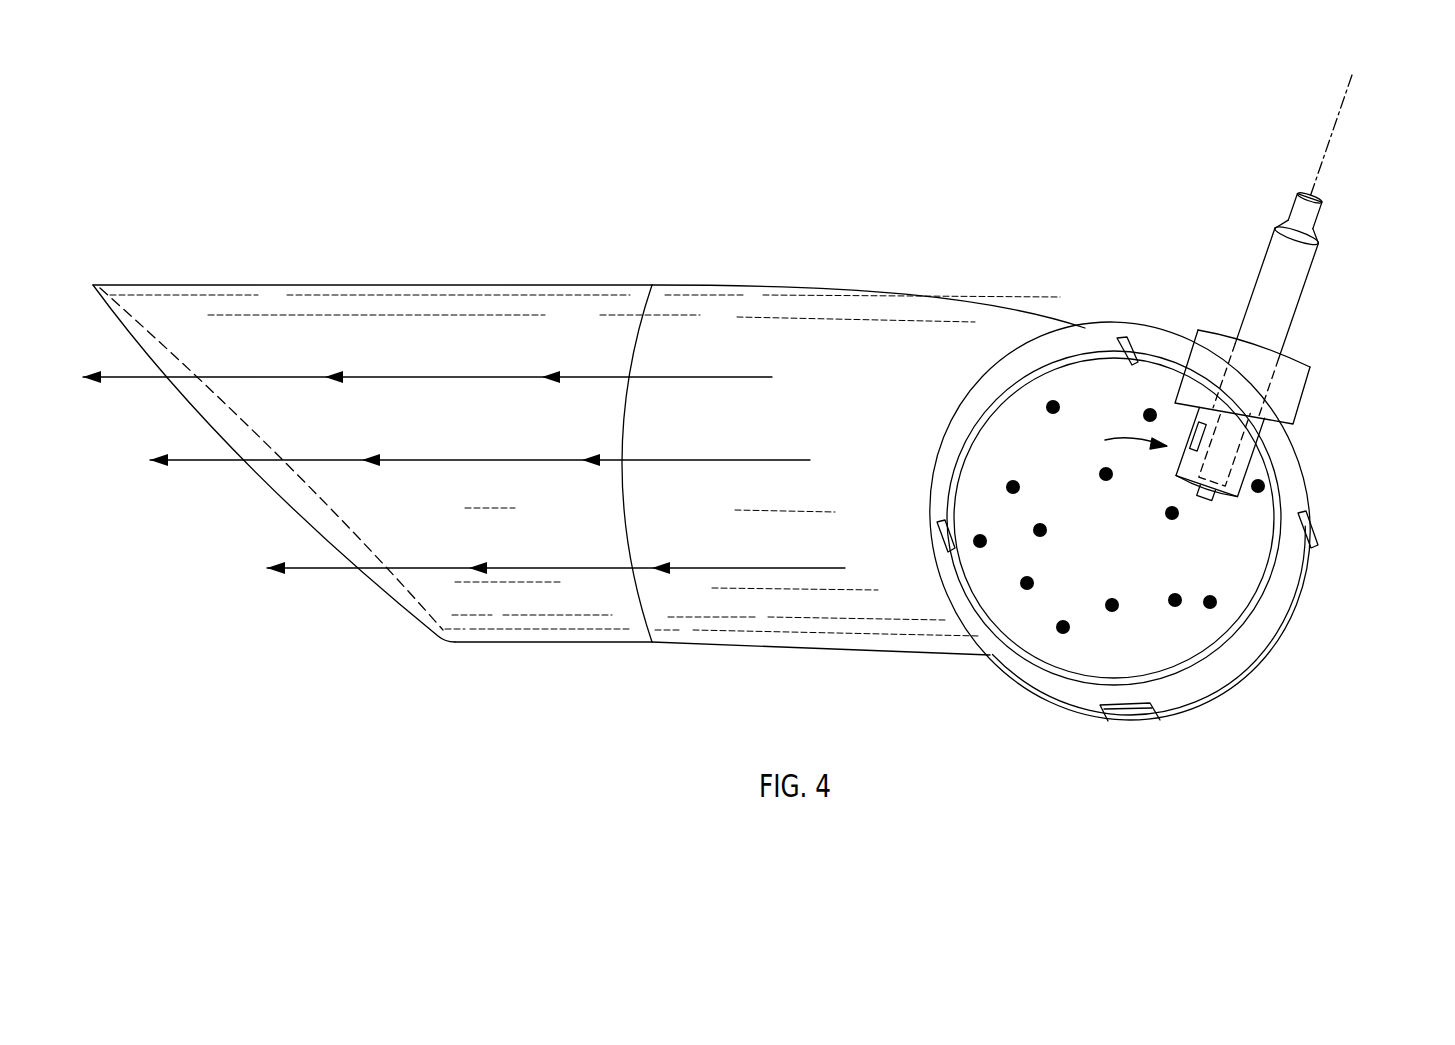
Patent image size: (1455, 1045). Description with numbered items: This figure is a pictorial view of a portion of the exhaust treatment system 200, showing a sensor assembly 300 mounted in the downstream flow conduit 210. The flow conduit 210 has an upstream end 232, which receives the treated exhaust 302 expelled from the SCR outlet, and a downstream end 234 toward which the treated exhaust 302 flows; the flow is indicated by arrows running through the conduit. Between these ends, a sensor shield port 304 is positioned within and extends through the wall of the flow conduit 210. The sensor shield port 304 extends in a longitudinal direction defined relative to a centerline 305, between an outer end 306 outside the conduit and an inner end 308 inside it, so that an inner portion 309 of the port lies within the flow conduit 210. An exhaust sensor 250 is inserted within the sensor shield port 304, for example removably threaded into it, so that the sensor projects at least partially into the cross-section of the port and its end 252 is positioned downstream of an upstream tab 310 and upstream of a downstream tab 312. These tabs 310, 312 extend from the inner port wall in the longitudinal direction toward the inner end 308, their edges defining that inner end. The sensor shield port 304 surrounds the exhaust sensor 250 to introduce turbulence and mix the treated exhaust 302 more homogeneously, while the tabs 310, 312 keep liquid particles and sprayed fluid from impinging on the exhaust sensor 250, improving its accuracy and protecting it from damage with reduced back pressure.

The exhaust treatment system 200 is at (220, 177).
The downstream flow conduit 210 is at (700, 645).
The upstream end 232 is at (1265, 675).
The downstream end 234 is at (413, 607).
The exhaust sensor 250 is at (1300, 295).
The end 252 is at (1208, 492).
The sensor assembly 300 is at (1388, 407).
The treated exhaust 302 is at (437, 377).
The sensor shield port 304 is at (1305, 392).
The centerline 305 is at (1318, 143).
The outer end 306 is at (1205, 330).
The inner end 308 is at (1217, 500).
The inner portion 309 is at (1112, 443).
The upstream tab 310 is at (1205, 500).
The downstream tab 312 is at (1185, 465).